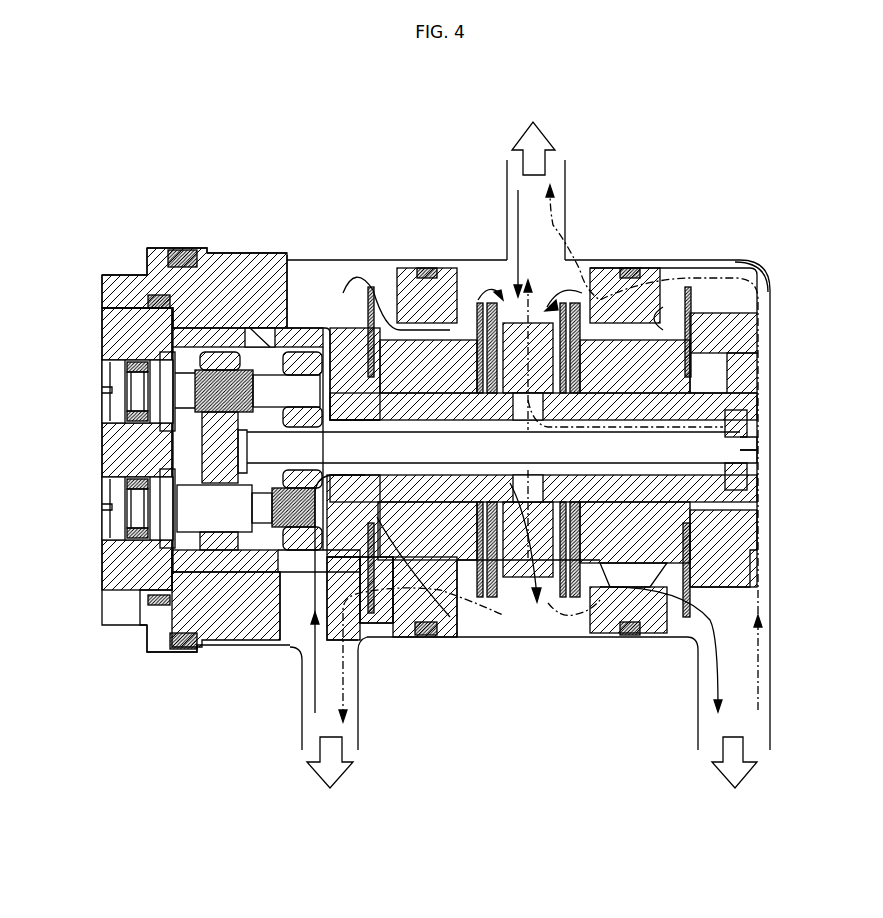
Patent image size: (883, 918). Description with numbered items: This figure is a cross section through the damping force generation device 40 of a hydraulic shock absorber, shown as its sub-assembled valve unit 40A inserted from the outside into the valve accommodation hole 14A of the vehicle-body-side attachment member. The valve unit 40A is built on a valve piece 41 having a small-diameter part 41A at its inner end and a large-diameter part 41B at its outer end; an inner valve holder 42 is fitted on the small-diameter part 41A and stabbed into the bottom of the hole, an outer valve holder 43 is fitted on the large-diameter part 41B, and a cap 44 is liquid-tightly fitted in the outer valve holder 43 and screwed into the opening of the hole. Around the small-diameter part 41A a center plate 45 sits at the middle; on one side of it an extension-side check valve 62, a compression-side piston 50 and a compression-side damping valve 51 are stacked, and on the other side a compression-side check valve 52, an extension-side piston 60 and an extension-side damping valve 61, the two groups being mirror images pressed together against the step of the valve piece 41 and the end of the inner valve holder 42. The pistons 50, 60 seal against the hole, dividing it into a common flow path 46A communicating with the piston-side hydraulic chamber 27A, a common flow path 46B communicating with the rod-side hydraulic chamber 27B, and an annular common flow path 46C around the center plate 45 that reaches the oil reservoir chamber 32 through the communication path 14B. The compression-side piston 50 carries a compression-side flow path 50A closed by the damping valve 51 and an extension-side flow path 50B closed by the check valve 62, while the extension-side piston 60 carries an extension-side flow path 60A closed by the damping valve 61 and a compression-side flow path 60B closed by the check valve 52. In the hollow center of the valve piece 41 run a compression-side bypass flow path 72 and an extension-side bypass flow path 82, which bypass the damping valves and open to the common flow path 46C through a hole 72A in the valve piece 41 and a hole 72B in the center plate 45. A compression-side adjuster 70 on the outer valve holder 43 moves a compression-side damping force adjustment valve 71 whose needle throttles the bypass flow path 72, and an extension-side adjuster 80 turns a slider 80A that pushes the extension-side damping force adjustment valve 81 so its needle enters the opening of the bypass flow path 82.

The damping force generation device 40 is at (255, 212).
The valve unit 40A is at (188, 200).
The valve piece 41 is at (763, 393).
The small-diameter part 41A is at (730, 362).
The large-diameter part 41B is at (292, 330).
The inner valve holder 42 is at (750, 327).
The outer valve holder 43 is at (102, 320).
The cap 44 is at (115, 260).
The center plate 45 is at (515, 600).
The common flow path 46A is at (292, 643).
The common flow path 46B is at (772, 658).
The common flow path 46C is at (565, 630).
The compression-side piston 50 is at (445, 268).
The compression-side flow path 50A is at (430, 327).
The extension-side flow path 50B is at (425, 623).
The compression-side damping valve 51 is at (490, 300).
The compression-side check valve 52 is at (692, 617).
The extension-side piston 60 is at (650, 268).
The extension-side flow path 60A is at (617, 290).
The compression-side flow path 60B is at (627, 632).
The extension-side damping valve 61 is at (580, 300).
The extension-side check valve 62 is at (372, 623).
The compression-side adjuster 70 is at (102, 493).
The compression-side damping force adjustment valve 71 is at (340, 443).
The compression-side bypass flow path 72 is at (455, 560).
The hole 72A is at (522, 410).
The hole 72B is at (507, 397).
The extension-side adjuster 80 is at (102, 373).
The slider 80A is at (213, 625).
The extension-side damping force adjustment valve 81 is at (742, 448).
The extension-side bypass flow path 82 is at (747, 474).
The valve accommodation hole 14A is at (757, 283).
The communication path 14B is at (507, 183).
The oil reservoir chamber 32 is at (533, 134).
The piston-side hydraulic chamber 27A is at (325, 776).
The rod-side hydraulic chamber 27B is at (730, 776).